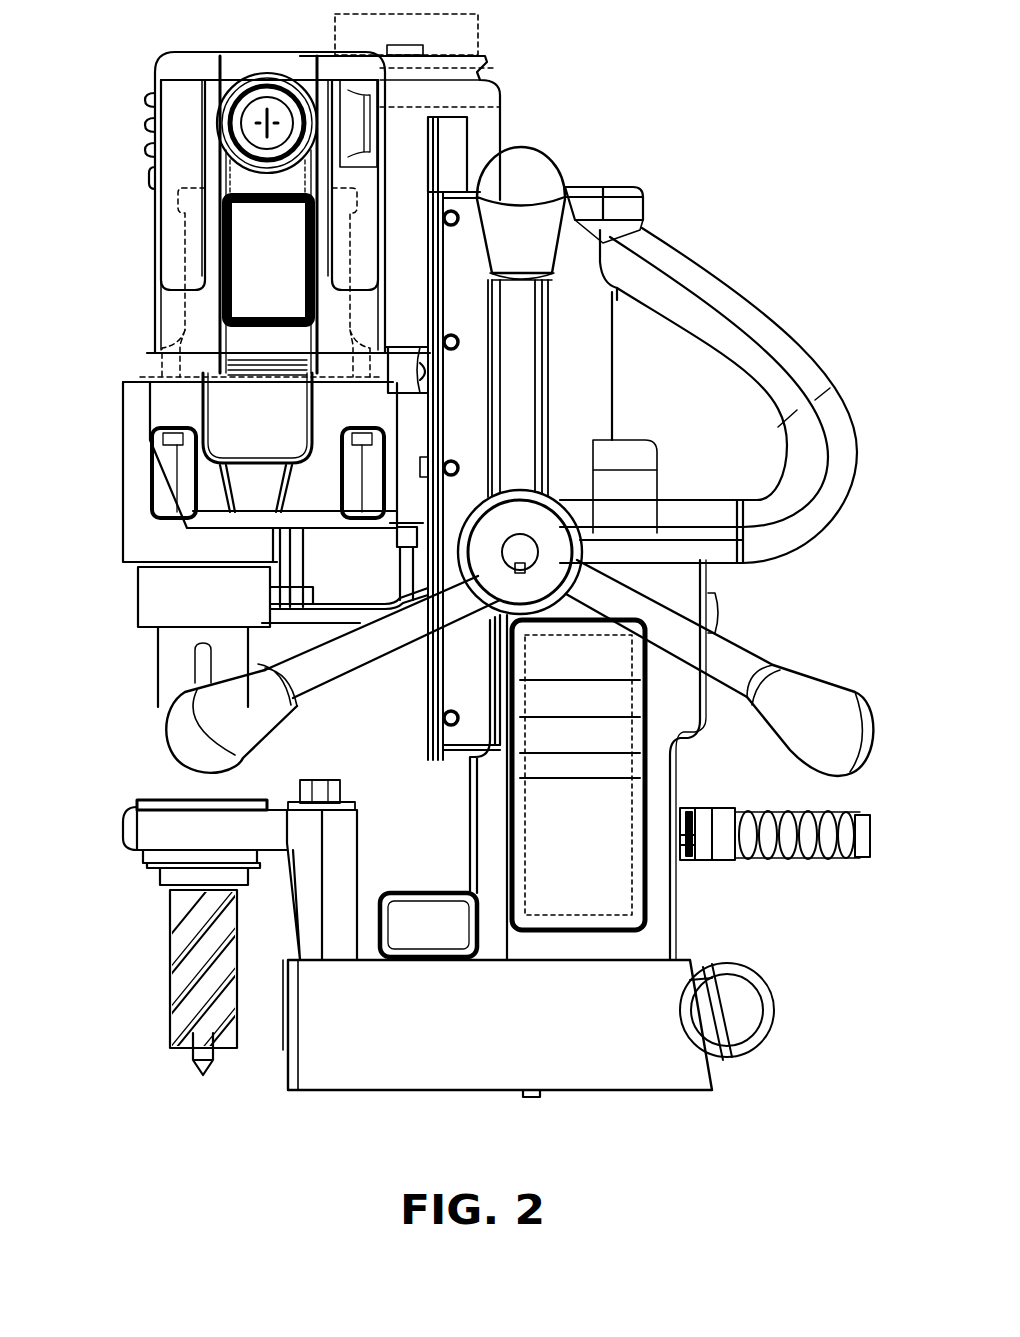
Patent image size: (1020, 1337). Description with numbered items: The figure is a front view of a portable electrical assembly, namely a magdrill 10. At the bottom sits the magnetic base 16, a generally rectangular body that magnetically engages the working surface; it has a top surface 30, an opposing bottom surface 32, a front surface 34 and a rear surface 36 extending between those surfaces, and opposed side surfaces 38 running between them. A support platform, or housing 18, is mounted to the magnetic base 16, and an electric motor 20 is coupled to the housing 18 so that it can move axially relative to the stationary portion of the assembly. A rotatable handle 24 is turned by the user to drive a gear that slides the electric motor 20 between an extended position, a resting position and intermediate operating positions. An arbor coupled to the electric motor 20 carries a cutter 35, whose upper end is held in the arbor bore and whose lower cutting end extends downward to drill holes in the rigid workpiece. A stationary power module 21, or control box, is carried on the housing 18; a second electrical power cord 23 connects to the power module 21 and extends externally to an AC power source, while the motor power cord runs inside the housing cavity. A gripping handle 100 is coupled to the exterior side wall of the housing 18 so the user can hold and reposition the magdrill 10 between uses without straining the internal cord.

The magdrill 10 is at (652, 158).
The magnetic base 16 is at (328, 1052).
The housing 18 is at (612, 348).
The electric motor 20 is at (185, 238).
The power module 21 is at (623, 925).
The second electrical power cord 23 is at (785, 862).
The rotatable handle 24 is at (803, 693).
The top surface 30 is at (373, 960).
The bottom surface 32 is at (387, 1090).
The front surface 34 is at (280, 1050).
The cutter 35 is at (168, 912).
The rear surface 36 is at (713, 1077).
The side surfaces 38 is at (524, 1049).
The gripping handle 100 is at (802, 348).